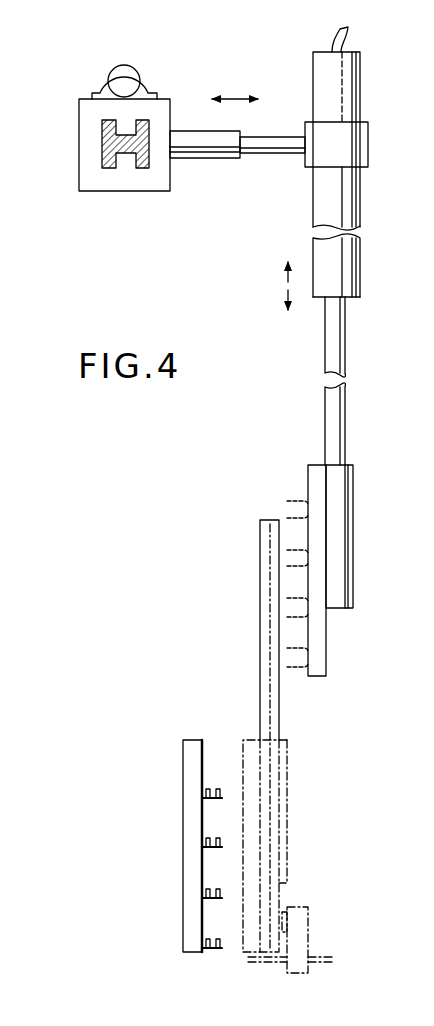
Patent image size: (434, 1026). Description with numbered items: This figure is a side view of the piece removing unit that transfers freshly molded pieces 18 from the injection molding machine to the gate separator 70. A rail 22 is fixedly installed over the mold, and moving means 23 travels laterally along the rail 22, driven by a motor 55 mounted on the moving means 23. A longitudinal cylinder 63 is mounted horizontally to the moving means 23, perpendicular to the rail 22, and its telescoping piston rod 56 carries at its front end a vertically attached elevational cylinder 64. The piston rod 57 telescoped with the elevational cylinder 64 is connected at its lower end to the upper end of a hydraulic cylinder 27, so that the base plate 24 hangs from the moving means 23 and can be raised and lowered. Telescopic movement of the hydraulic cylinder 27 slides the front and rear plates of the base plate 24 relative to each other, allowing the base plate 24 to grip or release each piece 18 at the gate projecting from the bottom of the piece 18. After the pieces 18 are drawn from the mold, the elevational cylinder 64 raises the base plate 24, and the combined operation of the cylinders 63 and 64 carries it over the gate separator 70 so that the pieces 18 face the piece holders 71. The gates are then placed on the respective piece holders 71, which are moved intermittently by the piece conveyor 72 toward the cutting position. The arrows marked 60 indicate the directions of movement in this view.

The piece 18 is at (290, 498).
The rail 22 is at (112, 169).
The moving means 23 is at (83, 128).
The base plate 24 is at (328, 665).
The hydraulic cylinder 27 is at (354, 552).
The motor 55 is at (139, 70).
The piston rod 56 is at (277, 154).
The piston rod 57 is at (337, 345).
The direction of movement 60 is at (227, 90).
The longitudinal cylinder 63 is at (213, 159).
The elevational cylinder 64 is at (355, 100).
The gate separator 70 is at (182, 905).
The piece holders 71 is at (210, 953).
The piece conveyor 72 is at (308, 933).